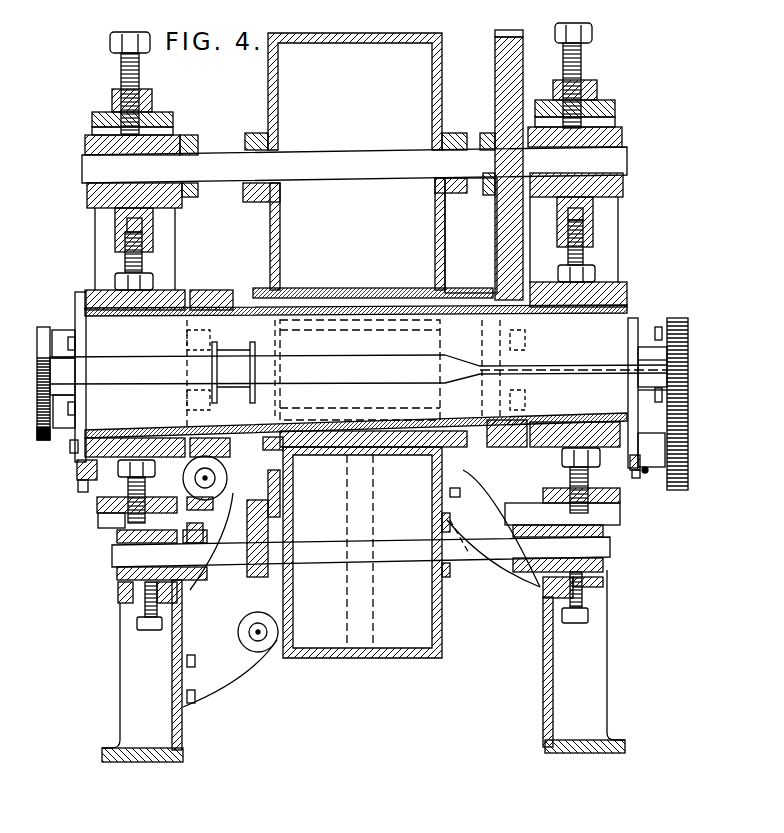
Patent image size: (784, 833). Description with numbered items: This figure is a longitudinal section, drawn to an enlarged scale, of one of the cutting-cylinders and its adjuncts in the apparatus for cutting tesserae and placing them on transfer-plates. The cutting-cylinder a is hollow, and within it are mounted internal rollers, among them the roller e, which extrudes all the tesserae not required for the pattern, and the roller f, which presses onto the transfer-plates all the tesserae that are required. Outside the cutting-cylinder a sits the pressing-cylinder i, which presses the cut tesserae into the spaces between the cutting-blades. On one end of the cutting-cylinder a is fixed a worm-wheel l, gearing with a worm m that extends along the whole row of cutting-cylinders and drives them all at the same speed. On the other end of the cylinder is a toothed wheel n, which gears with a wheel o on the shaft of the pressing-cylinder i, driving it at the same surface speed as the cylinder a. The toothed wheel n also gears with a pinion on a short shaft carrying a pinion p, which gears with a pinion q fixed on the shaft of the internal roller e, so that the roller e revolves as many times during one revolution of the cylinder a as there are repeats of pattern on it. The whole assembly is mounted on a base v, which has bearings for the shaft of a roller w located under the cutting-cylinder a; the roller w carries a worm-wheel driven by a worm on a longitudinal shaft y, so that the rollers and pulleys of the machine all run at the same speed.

The pressing-cylinder i is at (370, 163).
The wheel o is at (499, 165).
The worm-wheel l is at (222, 292).
The roller e is at (352, 390).
The roller f is at (224, 376).
The cutting-cylinder a is at (357, 392).
The worm m is at (215, 478).
The toothed wheel n is at (525, 500).
The roller w is at (366, 552).
The longitudinal shaft y is at (258, 632).
The base v is at (363, 666).
The pinion q is at (688, 404).
The pinion p is at (673, 400).